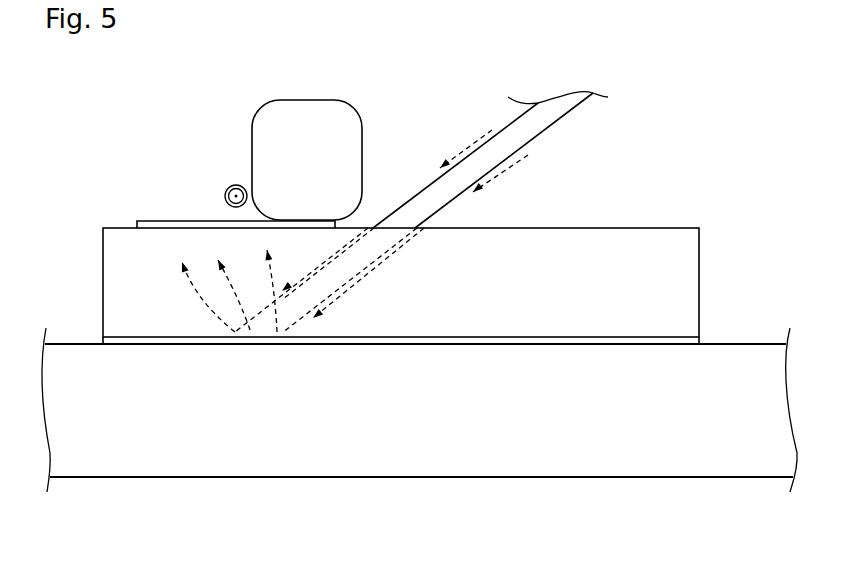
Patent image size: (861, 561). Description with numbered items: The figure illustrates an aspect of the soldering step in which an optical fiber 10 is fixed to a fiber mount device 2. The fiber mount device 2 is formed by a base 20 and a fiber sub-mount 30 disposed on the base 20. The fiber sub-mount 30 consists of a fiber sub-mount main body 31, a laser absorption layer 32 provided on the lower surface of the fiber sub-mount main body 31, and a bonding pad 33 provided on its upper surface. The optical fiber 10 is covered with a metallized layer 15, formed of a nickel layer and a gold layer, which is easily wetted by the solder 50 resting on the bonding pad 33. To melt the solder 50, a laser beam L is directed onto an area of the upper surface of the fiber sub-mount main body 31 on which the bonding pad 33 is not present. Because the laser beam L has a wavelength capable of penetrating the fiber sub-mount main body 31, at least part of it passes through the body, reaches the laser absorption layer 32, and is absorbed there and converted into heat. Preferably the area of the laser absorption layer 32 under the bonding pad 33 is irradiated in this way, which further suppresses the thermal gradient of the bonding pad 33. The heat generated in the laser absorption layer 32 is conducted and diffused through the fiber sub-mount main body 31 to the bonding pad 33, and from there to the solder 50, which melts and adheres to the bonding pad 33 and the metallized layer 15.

The fiber mount device 2 is at (773, 153).
The optical fiber 10 is at (233, 186).
The metallized layer 15 is at (225, 188).
The base 20 is at (292, 463).
The fiber sub-mount 30 is at (632, 213).
The fiber sub-mount main body 31 is at (690, 285).
The laser absorption layer 32 is at (680, 342).
The bonding pad 33 is at (170, 225).
The solder 50 is at (293, 132).
The laser beam L is at (508, 118).